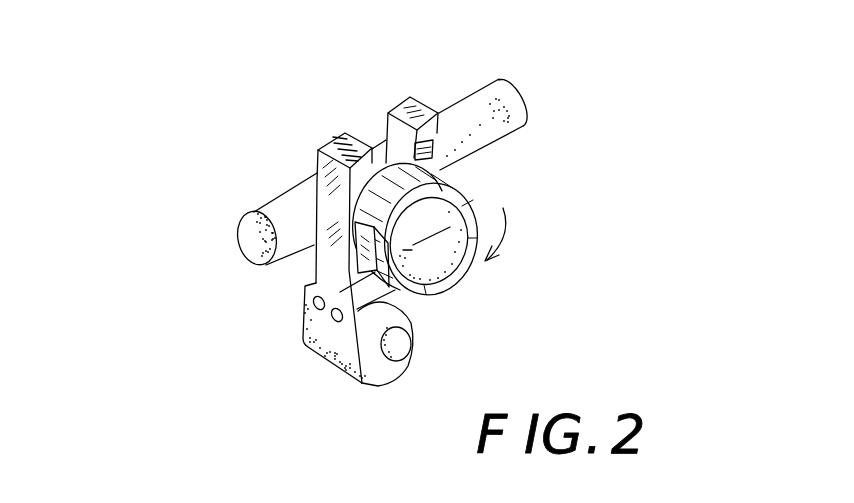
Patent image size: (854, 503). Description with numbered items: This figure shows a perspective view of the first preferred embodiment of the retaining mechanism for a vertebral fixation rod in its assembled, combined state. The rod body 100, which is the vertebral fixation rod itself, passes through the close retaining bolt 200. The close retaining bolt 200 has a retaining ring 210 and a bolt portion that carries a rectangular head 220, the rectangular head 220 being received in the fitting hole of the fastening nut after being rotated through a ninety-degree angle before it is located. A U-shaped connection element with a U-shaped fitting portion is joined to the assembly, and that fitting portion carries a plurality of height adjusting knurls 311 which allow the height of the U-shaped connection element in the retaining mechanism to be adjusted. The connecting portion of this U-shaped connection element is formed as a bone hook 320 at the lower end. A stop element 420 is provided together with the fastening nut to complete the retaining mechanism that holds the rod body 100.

The rod body 100 is at (482, 103).
The close retaining bolt 200 is at (236, 258).
The retaining ring 210 is at (316, 172).
The rectangular head 220 is at (415, 266).
The height adjusting knurls 311 is at (430, 155).
The bone hook 320 is at (367, 345).
The stop element 420 is at (465, 203).